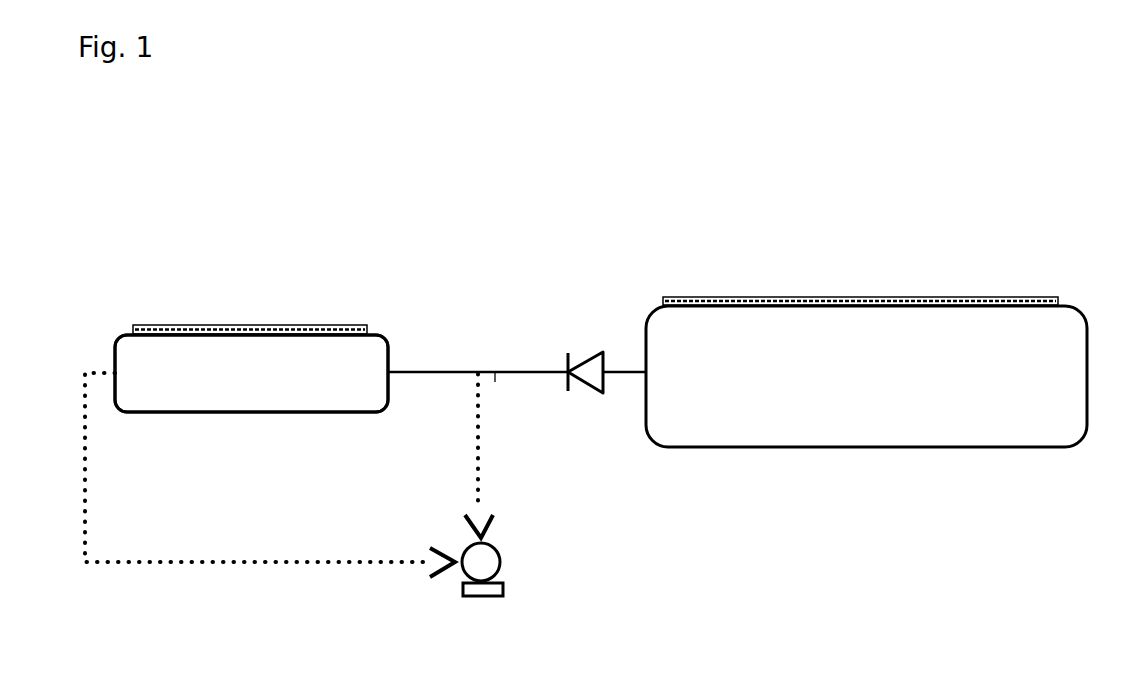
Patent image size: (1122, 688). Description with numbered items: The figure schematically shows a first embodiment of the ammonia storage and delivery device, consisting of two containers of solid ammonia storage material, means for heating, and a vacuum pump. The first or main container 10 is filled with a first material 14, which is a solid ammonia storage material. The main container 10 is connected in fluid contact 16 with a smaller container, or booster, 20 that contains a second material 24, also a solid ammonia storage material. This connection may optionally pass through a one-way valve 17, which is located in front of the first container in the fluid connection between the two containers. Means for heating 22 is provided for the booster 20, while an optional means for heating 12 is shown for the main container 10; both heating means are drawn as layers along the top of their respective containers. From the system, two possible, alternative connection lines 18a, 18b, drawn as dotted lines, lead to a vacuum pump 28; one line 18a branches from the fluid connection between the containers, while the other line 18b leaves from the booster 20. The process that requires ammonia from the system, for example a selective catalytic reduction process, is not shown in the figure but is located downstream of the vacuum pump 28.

The first or main container 10 is at (645, 323).
The means for heating 12 is at (905, 297).
The first material 14 is at (866, 376).
The fluid contact 16 is at (455, 370).
The one-way valve 17 is at (603, 395).
The connection line 18a is at (455, 456).
The connection line 18b is at (270, 483).
The smaller container (booster) 20 is at (123, 334).
The means for heating 22 is at (320, 320).
The second material 24 is at (251, 373).
The vacuum pump 28 is at (500, 560).